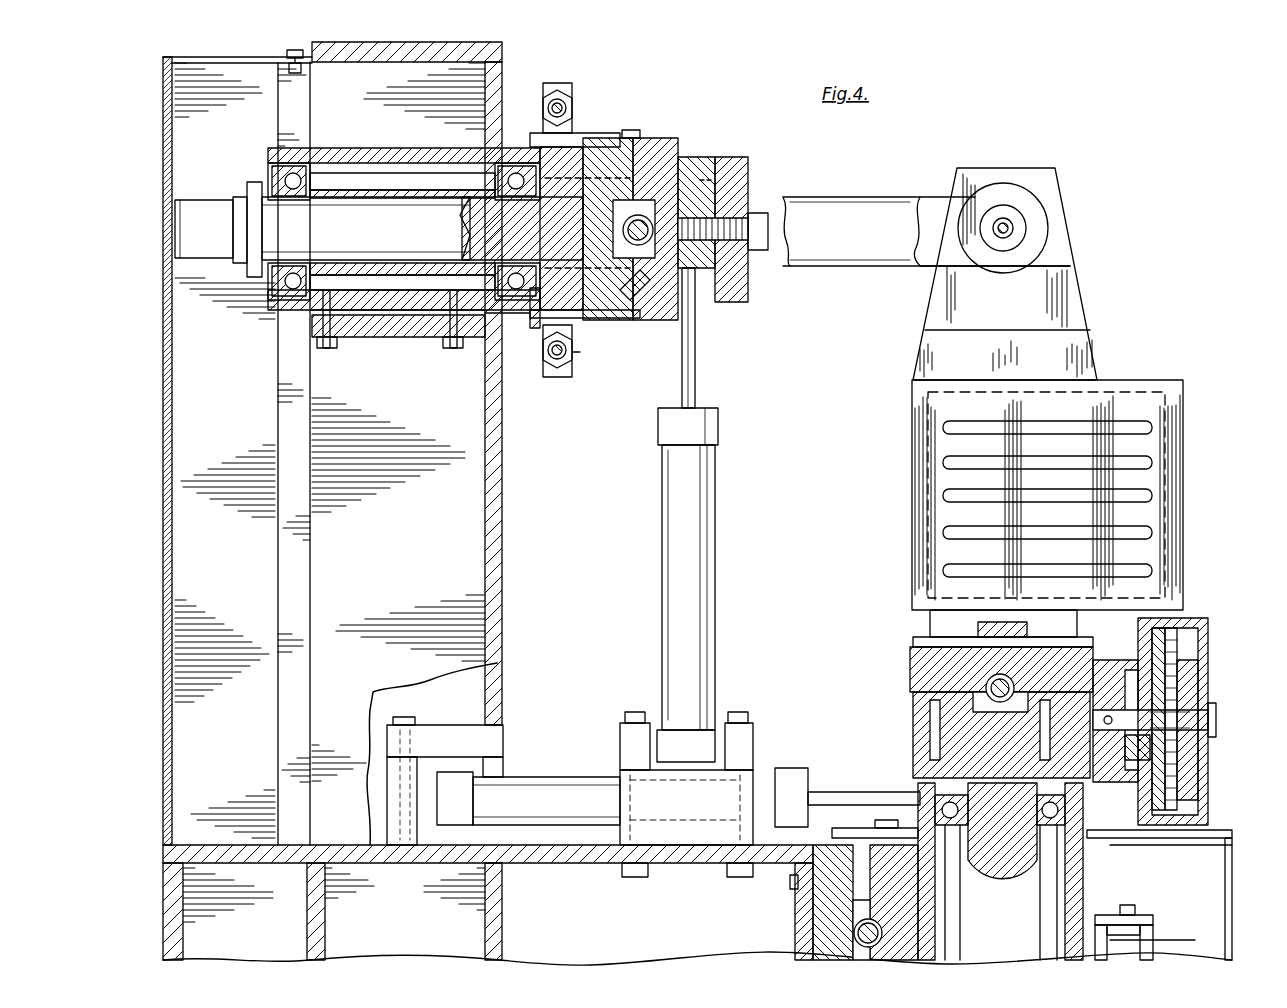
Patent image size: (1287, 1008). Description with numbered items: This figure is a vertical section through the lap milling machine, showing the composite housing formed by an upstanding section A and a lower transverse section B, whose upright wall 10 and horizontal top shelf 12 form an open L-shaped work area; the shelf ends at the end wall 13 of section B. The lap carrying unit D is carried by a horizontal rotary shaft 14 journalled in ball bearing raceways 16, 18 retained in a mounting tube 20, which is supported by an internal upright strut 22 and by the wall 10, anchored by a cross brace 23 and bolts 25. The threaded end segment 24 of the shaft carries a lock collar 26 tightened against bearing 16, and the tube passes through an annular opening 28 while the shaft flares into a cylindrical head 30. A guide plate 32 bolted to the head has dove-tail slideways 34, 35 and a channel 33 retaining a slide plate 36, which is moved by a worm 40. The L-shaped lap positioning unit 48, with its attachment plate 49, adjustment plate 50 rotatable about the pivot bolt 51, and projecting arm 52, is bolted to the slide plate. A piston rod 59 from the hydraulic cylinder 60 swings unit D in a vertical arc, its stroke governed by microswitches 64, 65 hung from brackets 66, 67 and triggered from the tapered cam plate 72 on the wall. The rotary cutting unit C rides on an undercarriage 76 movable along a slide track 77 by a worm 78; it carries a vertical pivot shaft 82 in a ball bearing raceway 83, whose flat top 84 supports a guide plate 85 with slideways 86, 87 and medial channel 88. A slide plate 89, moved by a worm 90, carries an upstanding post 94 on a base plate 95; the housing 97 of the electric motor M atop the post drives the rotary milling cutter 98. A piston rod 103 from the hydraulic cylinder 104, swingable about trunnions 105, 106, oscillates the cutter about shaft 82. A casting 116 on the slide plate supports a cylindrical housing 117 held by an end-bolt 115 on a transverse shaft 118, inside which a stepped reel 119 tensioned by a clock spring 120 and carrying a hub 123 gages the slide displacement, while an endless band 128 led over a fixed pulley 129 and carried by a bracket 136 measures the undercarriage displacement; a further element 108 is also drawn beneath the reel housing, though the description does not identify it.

The upstanding section A is at (163, 72).
The lower transverse section B is at (575, 858).
The rotary cutting unit C is at (898, 632).
The lap carrying unit D is at (729, 132).
The electric motor M is at (1190, 474).
The upright wall 10 is at (503, 525).
The horizontal top shelf 12 is at (545, 845).
The end wall 13 is at (1232, 928).
The rotary shaft 14 is at (422, 228).
The ball bearing raceway 16 is at (288, 176).
The ball bearing raceway 18 is at (512, 165).
The mounting tube 20 is at (398, 165).
The internal upright strut 22 is at (381, 453).
The cross brace 23 is at (398, 337).
The end segment 24 is at (204, 229).
The bolts 25 is at (345, 345).
The lock collar 26 is at (250, 272).
The annular opening 28 is at (470, 338).
The cylindrical head 30 is at (580, 160).
The guide plate 32 is at (604, 322).
The longitudinal channel 33 is at (613, 228).
The slideway 34 is at (640, 165).
The slideway 35 is at (650, 305).
The slide plate 36 is at (684, 160).
The worm 40 is at (645, 240).
The lap positioning unit 48 is at (838, 185).
The attachment plate 49 is at (712, 160).
The adjustment plate 50 is at (750, 175).
The pivot bolt 51 is at (762, 250).
The projecting arm 52 is at (845, 270).
The piston rod 59 is at (697, 375).
The hydraulic cylinder 60 is at (666, 588).
The microswitch 64 is at (566, 72).
The microswitch 65 is at (565, 378).
The bracket 66 is at (575, 118).
The bracket 67 is at (576, 368).
The tapered cam plate 72 is at (518, 330).
The undercarriage 76 is at (878, 950).
The slide track 77 is at (850, 870).
The worm 78 is at (855, 925).
The pivot shaft 82 is at (1001, 892).
The ball bearing raceway 83 is at (1060, 812).
The flat top 84 is at (920, 735).
The guide plate 85 is at (925, 715).
The slideway 86 is at (935, 698).
The slideway 87 is at (1090, 710).
The medial channel 88 is at (1018, 712).
The slide plate 89 is at (912, 664).
The worm 90 is at (1012, 682).
The upstanding post 94 is at (1003, 624).
The base plate 95 is at (1030, 640).
The housing 97 is at (1040, 212).
The rotary milling cutter 98 is at (1013, 228).
The piston rod 103 is at (855, 790).
The hydraulic cylinder 104 is at (503, 781).
The trunnion 105 is at (455, 798).
The trunnion 106 is at (548, 832).
The bottom plate 108 is at (1225, 828).
The axial end-bolt 115 is at (1216, 720).
The casting 116 is at (1130, 640).
The cylindrical housing 117 is at (1205, 640).
The transverse shaft 118 is at (1185, 730).
The reel 119 is at (1160, 800).
The clock spring 120 is at (1170, 700).
The hub 123 is at (1140, 748).
The endless band 128 is at (1100, 915).
The fixed pulley 129 is at (1100, 958).
The bracket 136 is at (1138, 912).